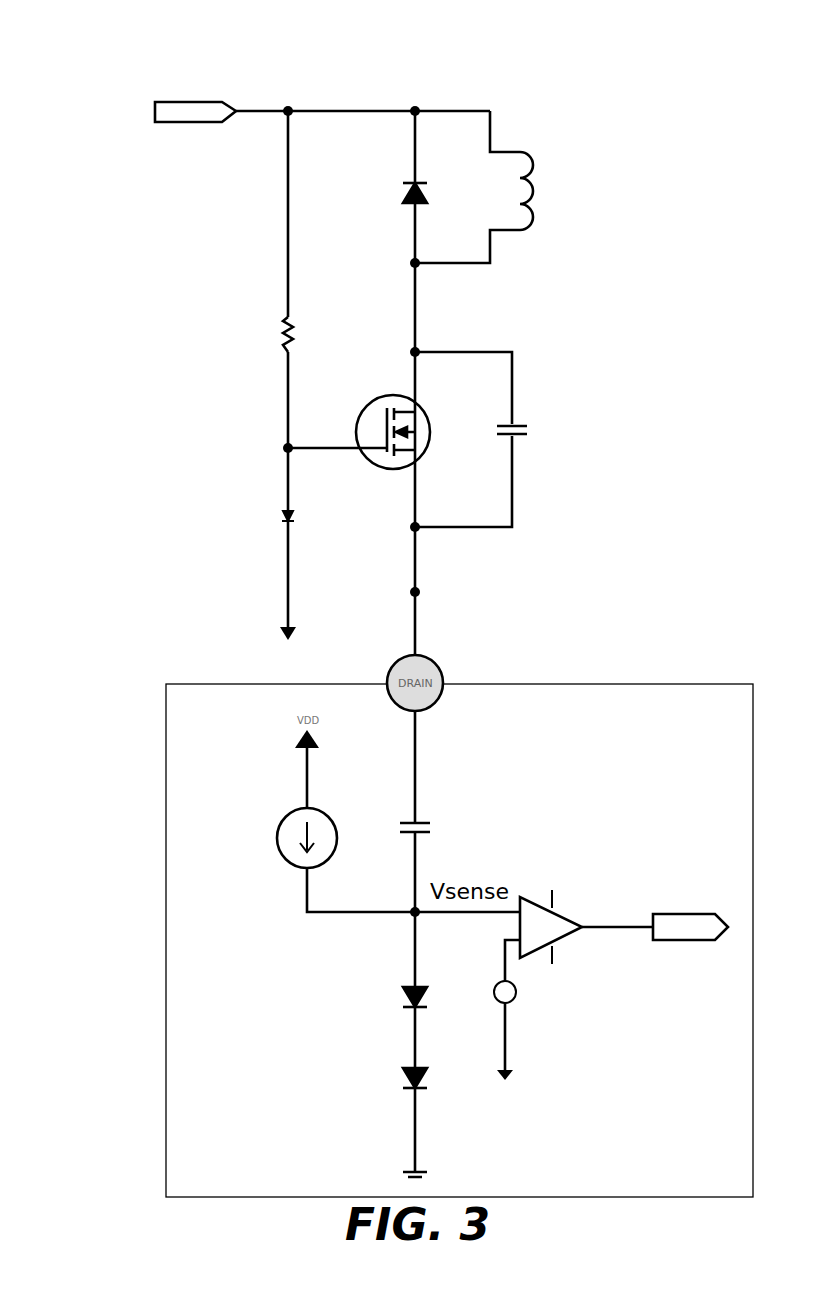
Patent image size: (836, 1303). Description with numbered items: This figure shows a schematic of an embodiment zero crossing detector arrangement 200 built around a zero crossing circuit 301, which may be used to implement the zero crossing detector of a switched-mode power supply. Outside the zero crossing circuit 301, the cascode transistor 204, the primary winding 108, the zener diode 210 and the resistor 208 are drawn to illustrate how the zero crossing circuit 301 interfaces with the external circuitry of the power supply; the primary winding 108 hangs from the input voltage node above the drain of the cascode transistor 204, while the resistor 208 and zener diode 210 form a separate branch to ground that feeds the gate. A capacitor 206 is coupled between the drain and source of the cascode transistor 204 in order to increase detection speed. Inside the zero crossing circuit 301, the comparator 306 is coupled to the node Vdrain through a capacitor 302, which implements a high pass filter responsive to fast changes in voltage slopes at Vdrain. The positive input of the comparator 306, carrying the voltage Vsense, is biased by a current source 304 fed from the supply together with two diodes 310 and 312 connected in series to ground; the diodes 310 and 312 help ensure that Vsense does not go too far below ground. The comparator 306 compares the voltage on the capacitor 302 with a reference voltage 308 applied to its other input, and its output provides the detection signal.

The circuit 200 is at (80, 34).
The primary winding 108 is at (526, 175).
The cascode transistor 204 is at (388, 398).
The capacitor 206 is at (526, 421).
The resistor 208 is at (280, 326).
The zener diode 210 is at (273, 513).
The zero crossing circuit 301 is at (149, 686).
The capacitor 302 is at (404, 821).
The current source 304 is at (287, 821).
The comparator 306 is at (557, 911).
The reference voltage 308 is at (514, 1002).
The diode 310 is at (404, 990).
The diode 312 is at (404, 1072).